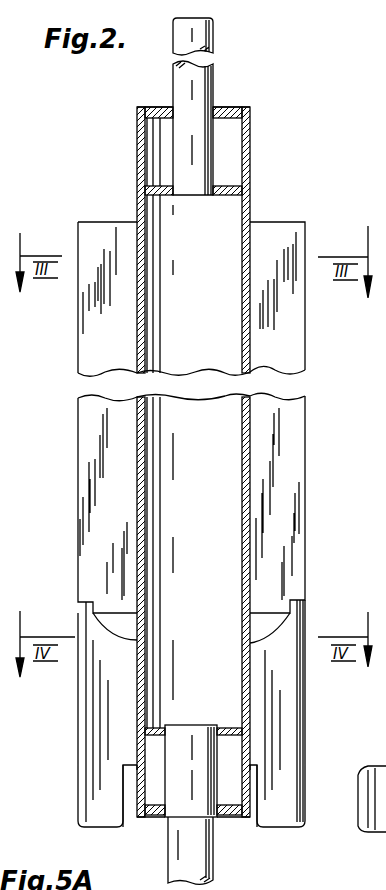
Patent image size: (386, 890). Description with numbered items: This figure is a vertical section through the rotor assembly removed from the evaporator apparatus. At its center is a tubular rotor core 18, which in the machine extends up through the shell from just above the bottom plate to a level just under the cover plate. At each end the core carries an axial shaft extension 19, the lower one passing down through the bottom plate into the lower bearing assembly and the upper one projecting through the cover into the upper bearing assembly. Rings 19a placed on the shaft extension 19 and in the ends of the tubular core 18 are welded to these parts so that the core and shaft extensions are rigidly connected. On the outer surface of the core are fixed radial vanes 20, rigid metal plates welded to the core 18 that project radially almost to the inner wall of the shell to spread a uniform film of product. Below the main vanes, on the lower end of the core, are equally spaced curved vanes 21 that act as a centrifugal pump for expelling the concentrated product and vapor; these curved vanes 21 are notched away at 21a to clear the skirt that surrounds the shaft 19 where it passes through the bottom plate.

The tubular rotor core 18 is at (252, 598).
The axial shaft extension 19 is at (213, 158).
The rings 19a is at (232, 108).
The vanes 20 is at (78, 313).
The curved vanes 21 is at (80, 706).
The notch 21a is at (118, 778).